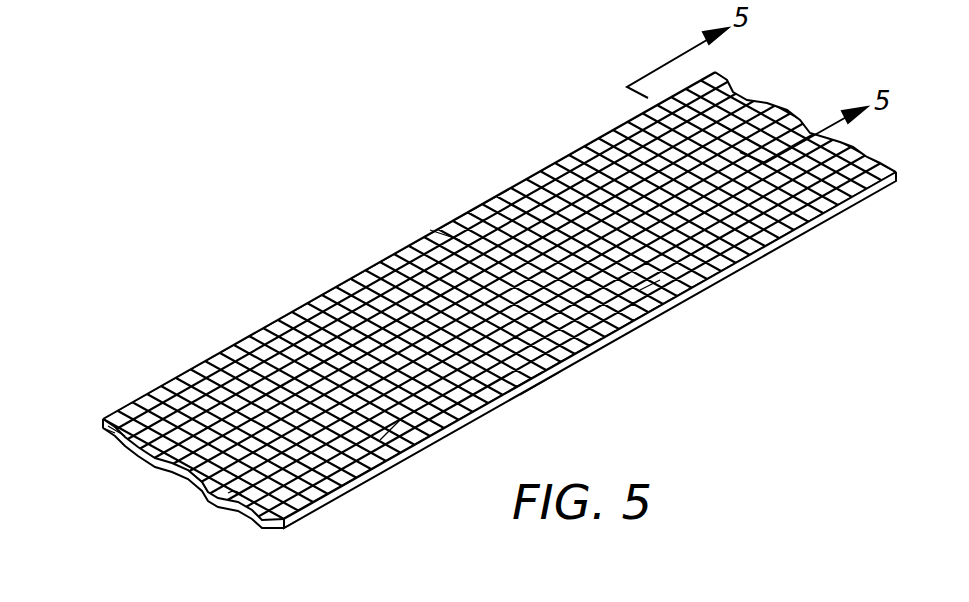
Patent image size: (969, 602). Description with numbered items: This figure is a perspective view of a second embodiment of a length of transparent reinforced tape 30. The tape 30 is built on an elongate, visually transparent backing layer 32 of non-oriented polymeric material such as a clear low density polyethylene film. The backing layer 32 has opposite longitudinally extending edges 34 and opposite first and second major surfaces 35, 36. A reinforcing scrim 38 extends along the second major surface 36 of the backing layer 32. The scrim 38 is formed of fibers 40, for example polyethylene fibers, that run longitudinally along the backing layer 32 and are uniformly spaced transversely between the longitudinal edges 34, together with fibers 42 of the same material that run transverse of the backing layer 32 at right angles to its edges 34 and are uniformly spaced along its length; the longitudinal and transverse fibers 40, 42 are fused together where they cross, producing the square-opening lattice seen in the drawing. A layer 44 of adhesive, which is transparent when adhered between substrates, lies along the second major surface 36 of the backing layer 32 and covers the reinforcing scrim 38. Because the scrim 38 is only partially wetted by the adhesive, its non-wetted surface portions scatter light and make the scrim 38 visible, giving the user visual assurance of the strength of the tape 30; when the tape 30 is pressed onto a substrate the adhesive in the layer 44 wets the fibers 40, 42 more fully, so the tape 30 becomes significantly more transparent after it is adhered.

The length of transparent reinforced tape 30 is at (778, 62).
The backing layer 32 is at (261, 528).
The longitudinally extending edges 34 is at (100, 421).
The first major surface 35 is at (212, 496).
The second major surface 36 is at (231, 484).
The reinforcing scrim 38 is at (652, 285).
The fibers 40 is at (398, 430).
The fibers 42 is at (460, 240).
The layer of adhesive 44 is at (127, 432).